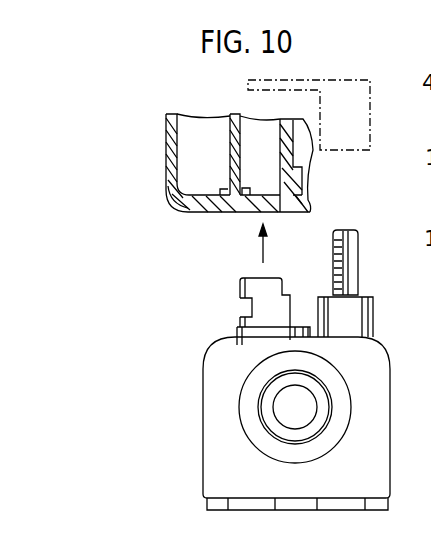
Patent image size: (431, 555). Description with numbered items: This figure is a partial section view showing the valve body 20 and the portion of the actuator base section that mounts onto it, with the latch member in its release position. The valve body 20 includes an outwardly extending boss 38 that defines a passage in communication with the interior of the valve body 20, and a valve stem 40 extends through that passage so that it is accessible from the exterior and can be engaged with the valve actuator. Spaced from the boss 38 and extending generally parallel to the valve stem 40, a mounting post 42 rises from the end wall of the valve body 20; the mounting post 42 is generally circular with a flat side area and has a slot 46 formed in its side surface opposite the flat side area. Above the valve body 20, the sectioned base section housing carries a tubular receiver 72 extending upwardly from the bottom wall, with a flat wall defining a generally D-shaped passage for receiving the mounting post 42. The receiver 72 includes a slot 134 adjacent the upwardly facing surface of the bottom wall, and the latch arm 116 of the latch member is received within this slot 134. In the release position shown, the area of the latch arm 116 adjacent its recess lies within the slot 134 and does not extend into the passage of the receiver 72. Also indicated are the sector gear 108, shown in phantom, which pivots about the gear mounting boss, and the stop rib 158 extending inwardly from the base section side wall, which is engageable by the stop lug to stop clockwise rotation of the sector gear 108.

The valve body 20 is at (184, 388).
The boss 38 is at (371, 314).
The valve stem 40 is at (360, 257).
The mounting post 42 is at (240, 285).
The slot 46 is at (240, 303).
The tubular receiver 72 is at (230, 123).
The sector gear 108 is at (328, 77).
The latch arm 116 is at (230, 188).
The slot 134 is at (287, 243).
The stop rib 158 is at (205, 203).